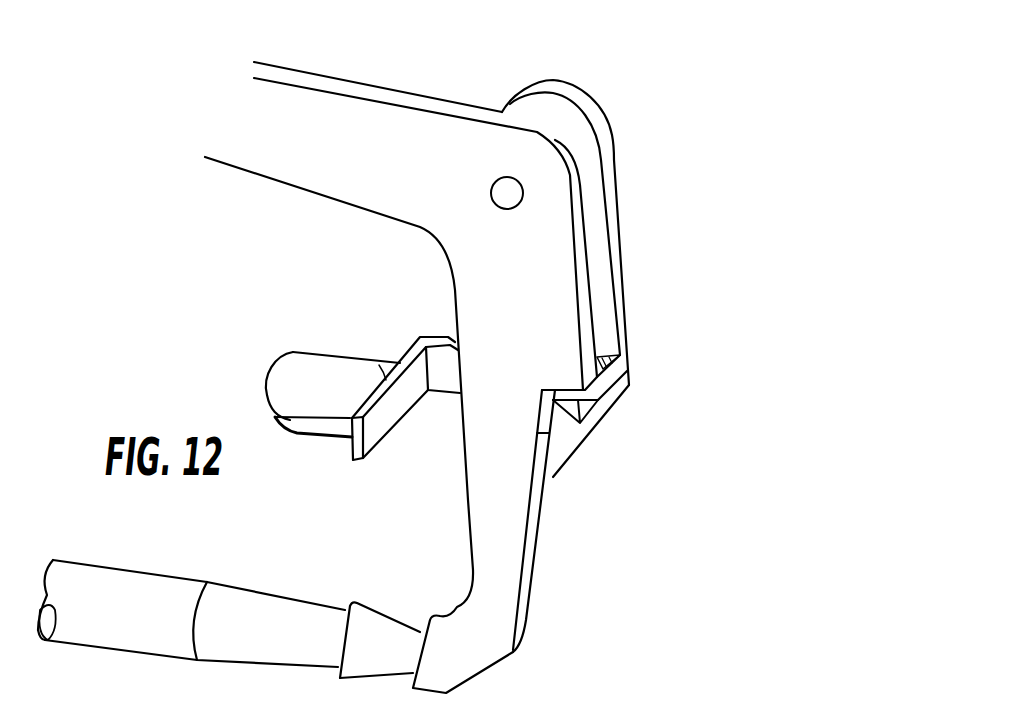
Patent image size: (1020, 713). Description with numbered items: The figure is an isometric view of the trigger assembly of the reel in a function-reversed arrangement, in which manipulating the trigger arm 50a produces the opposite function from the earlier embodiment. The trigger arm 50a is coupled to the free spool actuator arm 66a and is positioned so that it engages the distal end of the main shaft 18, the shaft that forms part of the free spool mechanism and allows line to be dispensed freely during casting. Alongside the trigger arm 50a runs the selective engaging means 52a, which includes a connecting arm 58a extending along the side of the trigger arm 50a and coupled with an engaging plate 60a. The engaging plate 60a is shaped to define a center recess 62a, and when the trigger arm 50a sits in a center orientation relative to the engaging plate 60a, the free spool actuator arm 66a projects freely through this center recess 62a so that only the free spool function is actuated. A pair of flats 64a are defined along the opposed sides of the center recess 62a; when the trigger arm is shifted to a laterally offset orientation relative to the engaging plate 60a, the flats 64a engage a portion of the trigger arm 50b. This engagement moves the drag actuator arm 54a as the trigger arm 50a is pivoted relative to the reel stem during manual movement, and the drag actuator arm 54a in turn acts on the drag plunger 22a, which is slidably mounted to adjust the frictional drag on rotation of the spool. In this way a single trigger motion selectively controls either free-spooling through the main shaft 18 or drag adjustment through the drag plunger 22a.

The main shaft 18 is at (128, 582).
The drag plunger 22a is at (308, 367).
The trigger arm 50a is at (348, 113).
The trigger arm portion 50b is at (563, 373).
The selective engaging means 52a is at (580, 86).
The drag actuator arm 54a is at (372, 440).
The connecting arm 58a is at (615, 223).
The engaging plate 60a is at (612, 392).
The center recess 62a is at (587, 410).
The flats 64a is at (600, 362).
The free spool actuator arm 66a is at (487, 525).